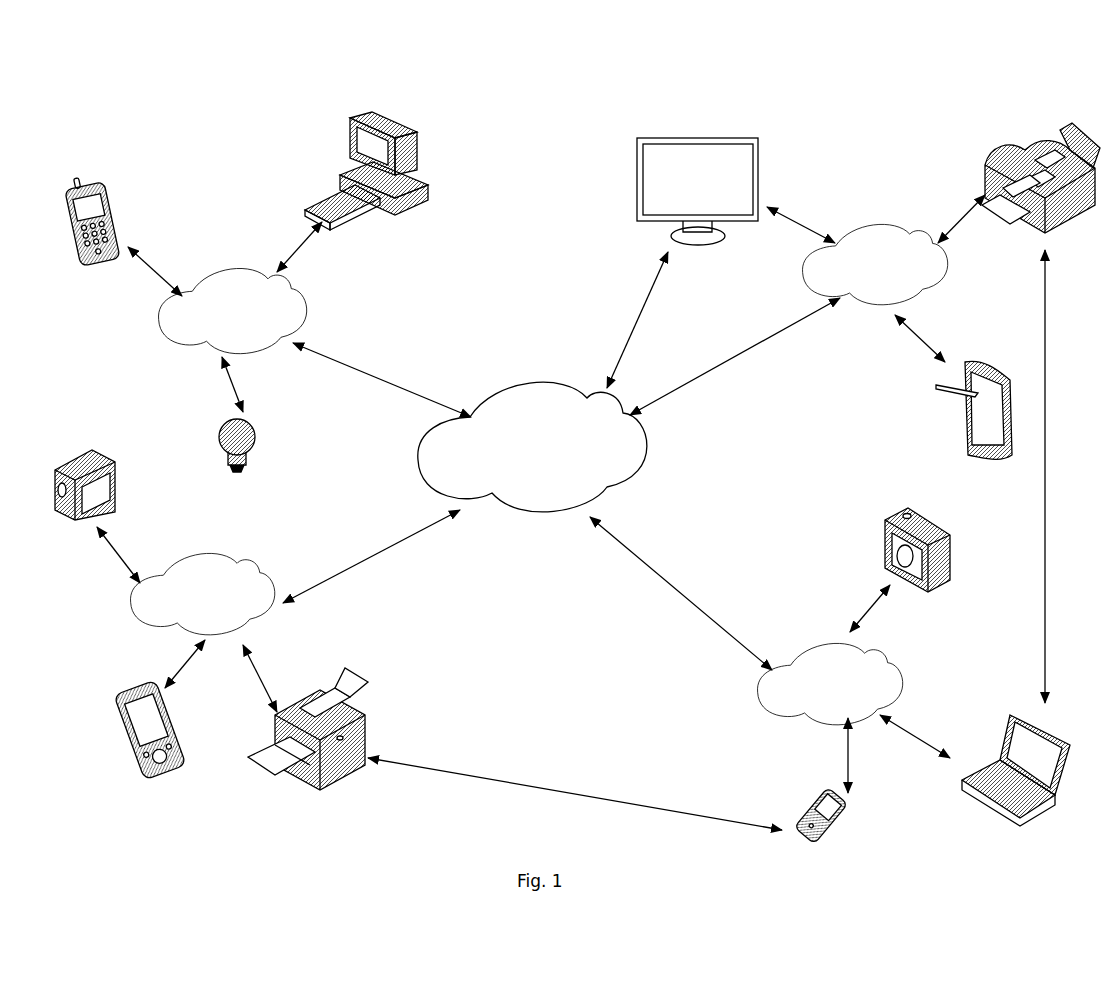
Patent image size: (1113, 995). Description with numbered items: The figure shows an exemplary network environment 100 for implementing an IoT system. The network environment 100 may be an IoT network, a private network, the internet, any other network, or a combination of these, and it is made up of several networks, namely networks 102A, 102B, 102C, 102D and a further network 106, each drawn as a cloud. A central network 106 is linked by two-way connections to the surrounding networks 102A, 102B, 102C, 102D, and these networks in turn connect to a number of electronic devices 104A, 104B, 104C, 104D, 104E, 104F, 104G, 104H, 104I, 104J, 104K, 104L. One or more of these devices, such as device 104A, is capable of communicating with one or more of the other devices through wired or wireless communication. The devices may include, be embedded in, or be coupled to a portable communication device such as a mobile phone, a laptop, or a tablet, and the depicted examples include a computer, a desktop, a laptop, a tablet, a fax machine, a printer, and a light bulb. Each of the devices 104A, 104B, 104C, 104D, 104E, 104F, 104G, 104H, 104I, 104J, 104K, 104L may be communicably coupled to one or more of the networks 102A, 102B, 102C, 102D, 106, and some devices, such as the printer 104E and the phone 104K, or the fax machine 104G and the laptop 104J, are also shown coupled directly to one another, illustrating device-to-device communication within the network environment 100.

The network environment 100 is at (489, 92).
The network 102A is at (213, 265).
The network 102B is at (247, 562).
The network 102C is at (860, 228).
The network 102D is at (800, 648).
The network 106 is at (500, 385).
The electronic device 104A is at (98, 190).
The electronic device 104B is at (888, 512).
The electronic device 104C is at (70, 455).
The electronic device 104D is at (122, 723).
The electronic device 104E is at (352, 777).
The electronic device 104F is at (667, 137).
The electronic device 104G is at (1008, 145).
The electronic device 104H is at (975, 358).
The electronic device 104I is at (335, 155).
The electronic device 104J is at (978, 760).
The electronic device 104K is at (802, 810).
The electronic device 104L is at (257, 432).